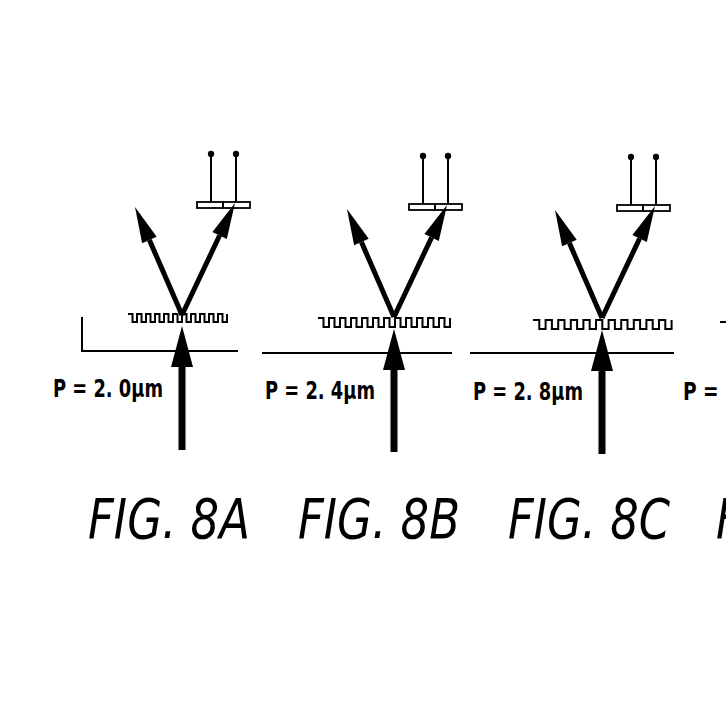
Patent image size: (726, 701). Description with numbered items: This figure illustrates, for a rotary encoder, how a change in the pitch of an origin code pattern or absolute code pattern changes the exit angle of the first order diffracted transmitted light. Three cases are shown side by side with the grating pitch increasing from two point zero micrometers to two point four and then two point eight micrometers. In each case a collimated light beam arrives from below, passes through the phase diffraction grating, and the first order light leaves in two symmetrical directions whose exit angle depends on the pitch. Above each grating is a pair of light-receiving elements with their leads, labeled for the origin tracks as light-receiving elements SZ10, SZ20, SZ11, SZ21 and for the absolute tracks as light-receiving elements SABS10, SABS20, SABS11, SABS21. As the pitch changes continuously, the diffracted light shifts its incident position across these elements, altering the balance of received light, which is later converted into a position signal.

In FIG. 8A, the light-receiving element SZ20 is at (178, 118).
In FIG. 8B, the light-receiving element SZ20 is at (390, 120).
In FIG. 8C, the light-receiving element SZ20 is at (598, 121).
In FIG. 8A, the light-receiving element SZ10 is at (178, 132).
In FIG. 8B, the light-receiving element SZ10 is at (390, 134).
In FIG. 8C, the light-receiving element SZ10 is at (598, 135).
In FIG. 8A, the light-receiving element SABS20 is at (178, 146).
In FIG. 8B, the light-receiving element SABS20 is at (390, 148).
In FIG. 8C, the light-receiving element SABS20 is at (598, 149).
In FIG. 8A, the light-receiving element SABS10 is at (198, 197).
In FIG. 8B, the light-receiving element SABS10 is at (390, 162).
In FIG. 8C, the light-receiving element SABS10 is at (598, 163).
In FIG. 8A, the light-receiving element SZ21 is at (263, 118).
In FIG. 8B, the light-receiving element SZ21 is at (475, 120).
In FIG. 8C, the light-receiving element SZ21 is at (683, 121).
In FIG. 8A, the light-receiving element SZ11 is at (263, 132).
In FIG. 8B, the light-receiving element SZ11 is at (475, 134).
In FIG. 8C, the light-receiving element SZ11 is at (683, 135).
In FIG. 8A, the light-receiving element SABS21 is at (263, 146).
In FIG. 8B, the light-receiving element SABS21 is at (475, 148).
In FIG. 8C, the light-receiving element SABS21 is at (683, 149).
In FIG. 8A, the light-receiving element SABS11 is at (252, 197).
In FIG. 8B, the light-receiving element SABS11 is at (475, 162).
In FIG. 8C, the light-receiving element SABS11 is at (683, 163).